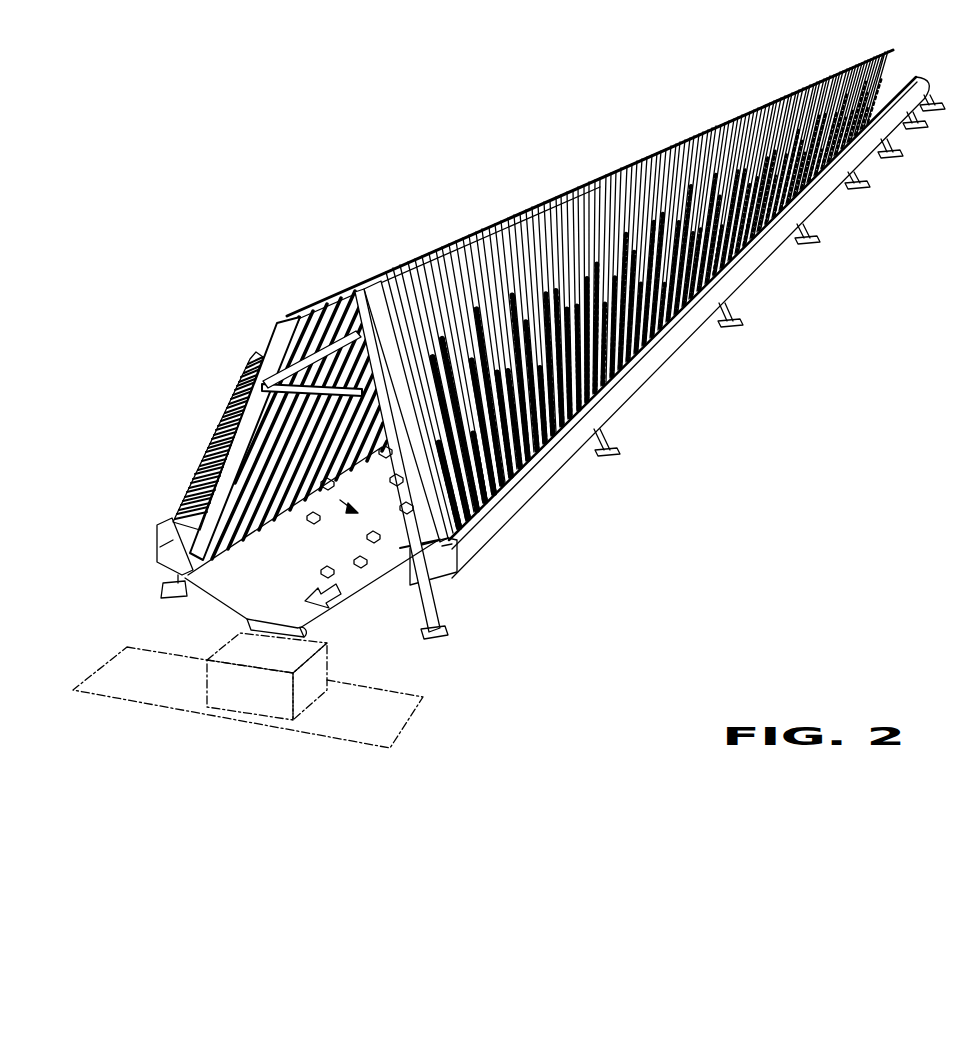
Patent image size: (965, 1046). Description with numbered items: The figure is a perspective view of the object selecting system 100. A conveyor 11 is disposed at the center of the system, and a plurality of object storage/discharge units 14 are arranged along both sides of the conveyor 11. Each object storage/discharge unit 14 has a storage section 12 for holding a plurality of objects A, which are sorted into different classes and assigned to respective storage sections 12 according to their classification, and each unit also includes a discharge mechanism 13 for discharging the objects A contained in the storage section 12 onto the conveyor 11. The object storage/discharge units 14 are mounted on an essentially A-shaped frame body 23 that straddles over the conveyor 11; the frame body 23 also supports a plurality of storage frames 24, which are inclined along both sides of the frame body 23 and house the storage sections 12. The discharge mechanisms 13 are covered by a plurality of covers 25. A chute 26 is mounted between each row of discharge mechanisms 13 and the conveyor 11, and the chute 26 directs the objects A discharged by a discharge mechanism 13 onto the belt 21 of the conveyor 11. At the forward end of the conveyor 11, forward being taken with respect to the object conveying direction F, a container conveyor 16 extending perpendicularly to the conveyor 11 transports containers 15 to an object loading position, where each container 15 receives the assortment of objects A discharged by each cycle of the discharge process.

The object selecting system 100 is at (231, 352).
The storage frames 24 is at (307, 315).
The storage section 12 is at (186, 493).
The covers 25 is at (173, 562).
The object storage/discharge unit 14 is at (148, 556).
The discharge mechanism 13 is at (170, 548).
The frame body 23 is at (430, 605).
The chute 26 is at (223, 592).
The belt 21 is at (330, 628).
The conveyor 11 is at (352, 607).
The objects A is at (193, 500).
The object conveying direction F is at (310, 604).
The container 15 is at (279, 723).
The container conveyor 16 is at (362, 740).